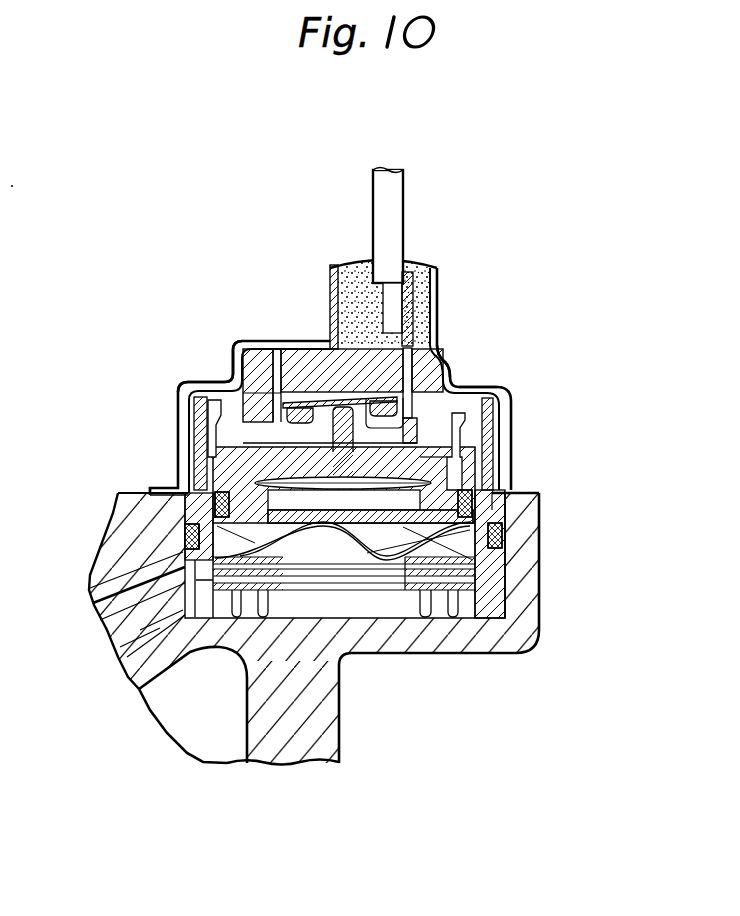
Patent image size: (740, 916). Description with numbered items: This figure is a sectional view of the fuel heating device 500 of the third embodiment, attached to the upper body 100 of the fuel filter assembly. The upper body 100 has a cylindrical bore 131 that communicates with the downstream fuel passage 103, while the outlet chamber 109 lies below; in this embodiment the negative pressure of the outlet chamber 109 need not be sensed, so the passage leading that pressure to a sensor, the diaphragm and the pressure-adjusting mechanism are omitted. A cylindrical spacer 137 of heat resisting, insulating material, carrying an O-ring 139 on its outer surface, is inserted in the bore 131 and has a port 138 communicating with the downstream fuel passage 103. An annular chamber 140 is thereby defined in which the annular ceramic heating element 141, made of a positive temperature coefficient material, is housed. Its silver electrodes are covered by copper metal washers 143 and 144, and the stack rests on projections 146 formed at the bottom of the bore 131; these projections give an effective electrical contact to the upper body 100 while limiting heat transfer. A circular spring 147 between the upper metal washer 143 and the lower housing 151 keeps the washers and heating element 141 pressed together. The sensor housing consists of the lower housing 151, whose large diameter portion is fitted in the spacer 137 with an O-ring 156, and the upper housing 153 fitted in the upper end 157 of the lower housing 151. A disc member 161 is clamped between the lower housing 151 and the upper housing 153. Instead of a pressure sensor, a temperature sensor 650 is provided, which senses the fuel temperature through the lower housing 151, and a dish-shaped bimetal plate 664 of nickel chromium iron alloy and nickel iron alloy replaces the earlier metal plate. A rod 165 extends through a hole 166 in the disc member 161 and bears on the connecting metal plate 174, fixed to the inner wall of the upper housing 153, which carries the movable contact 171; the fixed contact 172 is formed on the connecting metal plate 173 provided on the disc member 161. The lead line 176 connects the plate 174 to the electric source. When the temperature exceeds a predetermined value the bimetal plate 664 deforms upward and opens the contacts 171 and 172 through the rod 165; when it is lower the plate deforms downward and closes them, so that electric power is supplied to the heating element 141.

The upper body 100 is at (543, 648).
The downstream fuel passage 103 is at (110, 638).
The outlet chamber 109 is at (195, 742).
The cylindrical bore 131 is at (487, 625).
The cylindrical spacer 137 is at (474, 505).
The port 138 is at (129, 681).
The O-ring 139 is at (440, 545).
The annular chamber 140 is at (460, 552).
The annular ceramic heating element 141 is at (497, 598).
The upper metal washer 143 is at (462, 578).
The lower metal washer 144 is at (473, 592).
The projections 146 is at (455, 618).
The circular spring 147 is at (183, 500).
The lower housing 151 is at (217, 440).
The upper housing 153 is at (445, 350).
The O-ring 156 is at (237, 537).
The upper end 157 is at (487, 425).
The disc member 161 is at (465, 460).
The rod 165 is at (498, 387).
The hole 166 is at (225, 405).
The movable contact 171 is at (385, 392).
The fixed contact 172 is at (447, 374).
The connecting metal plate 173 is at (405, 323).
The connecting metal plate 174 is at (322, 402).
The lead line 176 is at (393, 217).
The fuel heating device 500 is at (239, 339).
The temperature sensor 650 is at (478, 487).
The dish-shaped bimetal plate 664 is at (200, 415).